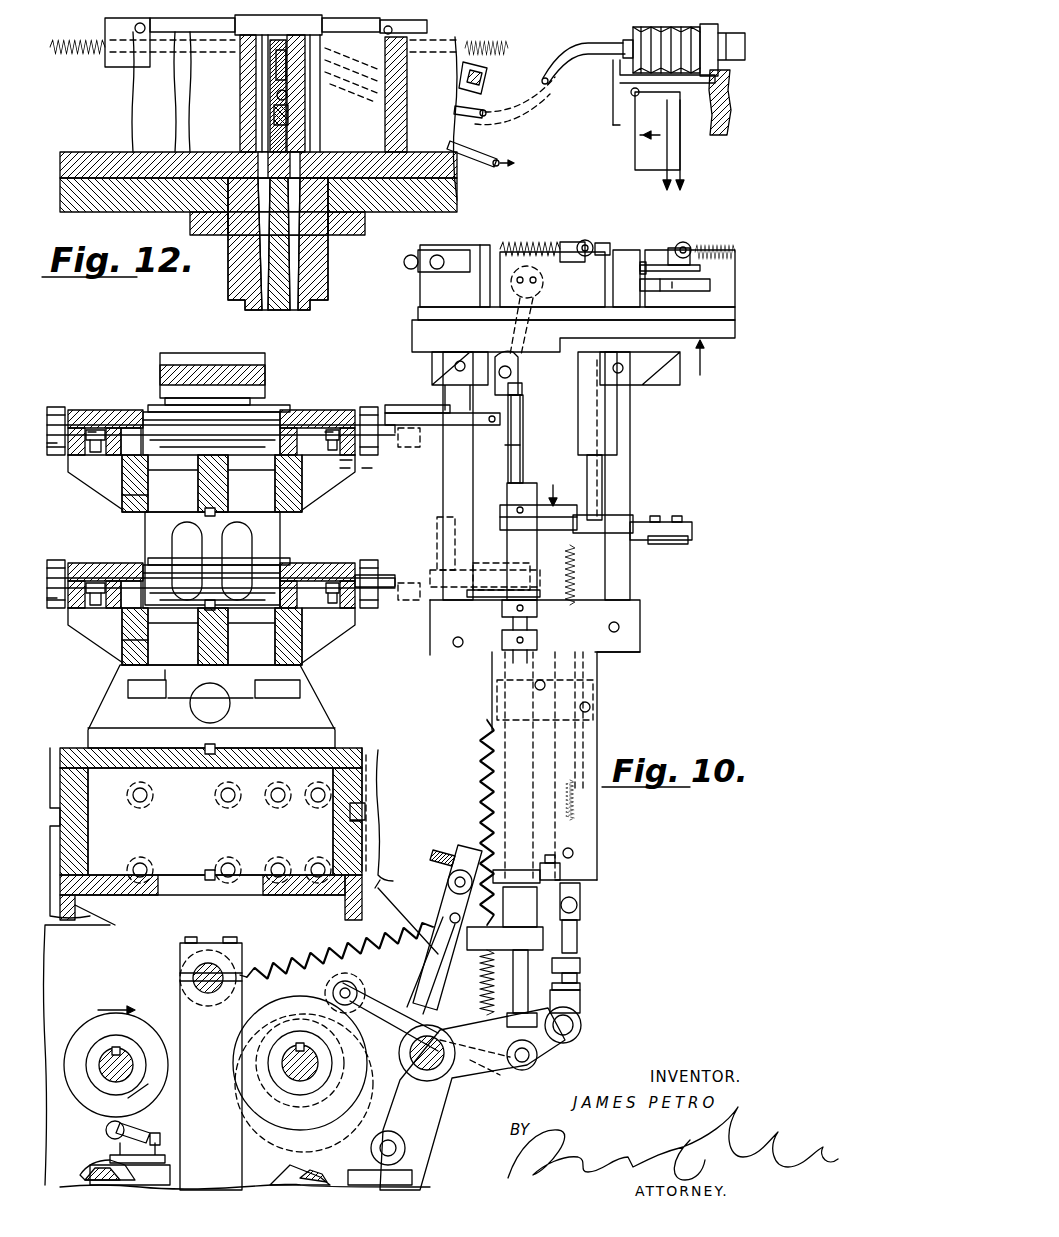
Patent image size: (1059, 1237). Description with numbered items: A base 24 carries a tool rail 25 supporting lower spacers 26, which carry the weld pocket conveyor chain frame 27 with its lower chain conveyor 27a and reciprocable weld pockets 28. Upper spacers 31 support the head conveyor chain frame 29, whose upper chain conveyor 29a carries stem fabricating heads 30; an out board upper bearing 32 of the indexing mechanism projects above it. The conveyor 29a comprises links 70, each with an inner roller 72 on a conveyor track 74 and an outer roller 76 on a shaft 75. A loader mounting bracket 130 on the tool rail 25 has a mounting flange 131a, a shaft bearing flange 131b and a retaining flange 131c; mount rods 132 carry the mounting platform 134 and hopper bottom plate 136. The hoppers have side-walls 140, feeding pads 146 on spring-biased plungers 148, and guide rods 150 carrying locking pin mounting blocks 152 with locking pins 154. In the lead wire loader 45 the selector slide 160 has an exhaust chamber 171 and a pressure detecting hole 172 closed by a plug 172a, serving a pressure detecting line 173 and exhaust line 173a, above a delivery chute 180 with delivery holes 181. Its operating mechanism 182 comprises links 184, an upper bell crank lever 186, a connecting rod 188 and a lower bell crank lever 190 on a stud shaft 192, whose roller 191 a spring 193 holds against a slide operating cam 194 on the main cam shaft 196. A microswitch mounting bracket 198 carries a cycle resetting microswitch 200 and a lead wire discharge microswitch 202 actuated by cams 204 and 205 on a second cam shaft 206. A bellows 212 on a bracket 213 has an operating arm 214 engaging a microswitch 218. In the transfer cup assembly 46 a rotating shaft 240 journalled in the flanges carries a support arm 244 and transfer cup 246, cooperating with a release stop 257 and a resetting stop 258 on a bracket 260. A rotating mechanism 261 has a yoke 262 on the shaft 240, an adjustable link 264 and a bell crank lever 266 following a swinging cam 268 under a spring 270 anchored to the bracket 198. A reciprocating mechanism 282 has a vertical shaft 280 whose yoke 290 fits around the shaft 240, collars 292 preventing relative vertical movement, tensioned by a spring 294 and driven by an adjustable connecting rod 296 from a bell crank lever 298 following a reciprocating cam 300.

In FIG. 10, the base 24 is at (75, 908).
In FIG. 10, the tool rail 25 is at (182, 868).
In FIG. 10, the lower spacers 26 is at (112, 697).
In FIG. 10, the lower or weld pocket conveyor chain frame 27 is at (122, 640).
In FIG. 10, the lower chain conveyor 27a is at (40, 595).
In FIG. 10, the weld pockets 28 is at (384, 566).
In FIG. 10, the upper or head conveyor chain frame 29 is at (125, 495).
In FIG. 10, the upper chain conveyor 29a is at (40, 440).
In FIG. 10, the stem fabricating heads 30 is at (56, 398).
In FIG. 10, the upper spacers 31 is at (270, 551).
In FIG. 10, the out board upper bearing 32 is at (260, 378).
In FIG. 10, the lead wire loader 45 is at (707, 366).
In FIG. 10, the transfer cup assembly 46 is at (553, 485).
In FIG. 10, the links 70 is at (348, 427).
In FIG. 10, the inner roller 72 is at (92, 432).
In FIG. 10, the conveyor track 74 is at (346, 470).
In FIG. 10, the shaft 75 is at (368, 470).
In FIG. 10, the outer roller 76 is at (346, 465).
In FIG. 10, the lead wire loader mounting bracket 130 is at (597, 676).
In FIG. 10, the upper plate-like mounting flange 131a is at (640, 620).
In FIG. 10, the lower shaft bearing flange 131b is at (595, 858).
In FIG. 10, the operating and retaining flange 131c is at (561, 933).
In FIG. 10, the mount rods 132 is at (455, 482).
In FIG. 12, the lead wire loader mounting platform 134 is at (446, 200).
In FIG. 10, the lead wire loader mounting platform 134 is at (425, 330).
In FIG. 12, the bottom plate 136 is at (100, 160).
In FIG. 10, the bottom plate 136 is at (426, 312).
In FIG. 10, the longitudinal side-walls 140 is at (472, 254).
In FIG. 12, the lead wire feeding pad 146 is at (317, 60).
In FIG. 12, the plunger 148 is at (487, 78).
In FIG. 10, the plunger 148 is at (430, 269).
In FIG. 12, the longitudinal guide rods 150 is at (70, 54).
In FIG. 10, the longitudinal guide rods 150 is at (540, 245).
In FIG. 12, the lead wire locking pin mounting blocks 152 is at (121, 68).
In FIG. 10, the lead wire locking pin mounting blocks 152 is at (572, 244).
In FIG. 12, the lead wire locking pins 154 is at (150, 24).
In FIG. 10, the lead wire locking pins 154 is at (592, 244).
In FIG. 12, the lead wire selector slide 160 is at (190, 216).
In FIG. 10, the lead wire selector slide 160 is at (628, 310).
In FIG. 12, the transverse exhaust chamber 171 is at (268, 100).
In FIG. 12, the vertical pressure detecting hole 172 is at (265, 70).
In FIG. 12, the plug 172a is at (278, 25).
In FIG. 12, the pressure detecting line 173 is at (530, 98).
In FIG. 10, the pressure detecting line 173 is at (698, 269).
In FIG. 12, the exhaust line 173a is at (476, 150).
In FIG. 10, the exhaust line 173a is at (694, 291).
In FIG. 12, the lead wire delivery chute 180 is at (242, 302).
In FIG. 10, the lead wire delivery chute 180 is at (616, 426).
In FIG. 12, the delivery holes 181 is at (294, 260).
In FIG. 10, the lead wire selector slide operating mechanism 182 is at (524, 432).
In FIG. 10, the links 184 is at (545, 290).
In FIG. 10, the upper bell crank lever 186 is at (525, 368).
In FIG. 10, the connecting rod 188 is at (510, 450).
In FIG. 10, the lower bell crank lever 190 is at (476, 1080).
In FIG. 10, the roller 191 is at (357, 991).
In FIG. 10, the stud shaft 192 is at (430, 1039).
In FIG. 10, the spring 193 is at (505, 873).
In FIG. 10, the slide operating cam 194 is at (235, 1106).
In FIG. 10, the longitudinal main cam shaft 196 is at (288, 1082).
In FIG. 10, the microswitch mounting bracket 198 is at (180, 1020).
In FIG. 10, the cycle resetting microswitch 200 is at (160, 1118).
In FIG. 10, the lead wire discharge microswitch 202 is at (106, 1134).
In FIG. 10, the microswitch operating cam 204 is at (88, 1096).
In FIG. 10, the microswitch operating cam 205 is at (149, 1084).
In FIG. 10, the second longitudinal cam shaft 206 is at (94, 1005).
In FIG. 12, the pressure responsive actuating means 212 is at (646, 40).
In FIG. 12, the bracket 213 is at (715, 130).
In FIG. 12, the operating arm 214 is at (613, 112).
In FIG. 12, the normally open microswitch 218 is at (634, 146).
In FIG. 10, the rotating or oscillating shaft 240 is at (508, 554).
In FIG. 10, the transfer cup mounting and support arm 244 is at (500, 508).
In FIG. 10, the transfer cup 246 is at (600, 498).
In FIG. 10, the lead wire release stop 257 is at (493, 605).
In FIG. 10, the transfer cup slide resetting stop 258 is at (662, 521).
In FIG. 10, the bracket 260 is at (652, 538).
In FIG. 10, the transfer cup assembly rotating mechanism 261 is at (428, 845).
In FIG. 10, the operating lever or yoke 262 is at (564, 884).
In FIG. 10, the adjustable link 264 is at (504, 867).
In FIG. 10, the bell crank lever 266 is at (438, 962).
In FIG. 10, the transfer cup assembly swinging cam 268 is at (302, 1000).
In FIG. 10, the spring 270 is at (258, 955).
In FIG. 10, the vertical shaft 280 is at (584, 578).
In FIG. 10, the transfer cup assembly reciprocating mechanism 282 is at (586, 1026).
In FIG. 10, the yoke 290 is at (601, 696).
In FIG. 10, the collars 292 is at (490, 746).
In FIG. 10, the spring 294 is at (636, 658).
In FIG. 10, the adjustable connecting rod 296 is at (580, 991).
In FIG. 10, the bell crank lever 298 is at (538, 1046).
In FIG. 10, the transfer cup assembly reciprocating cam 300 is at (280, 1152).